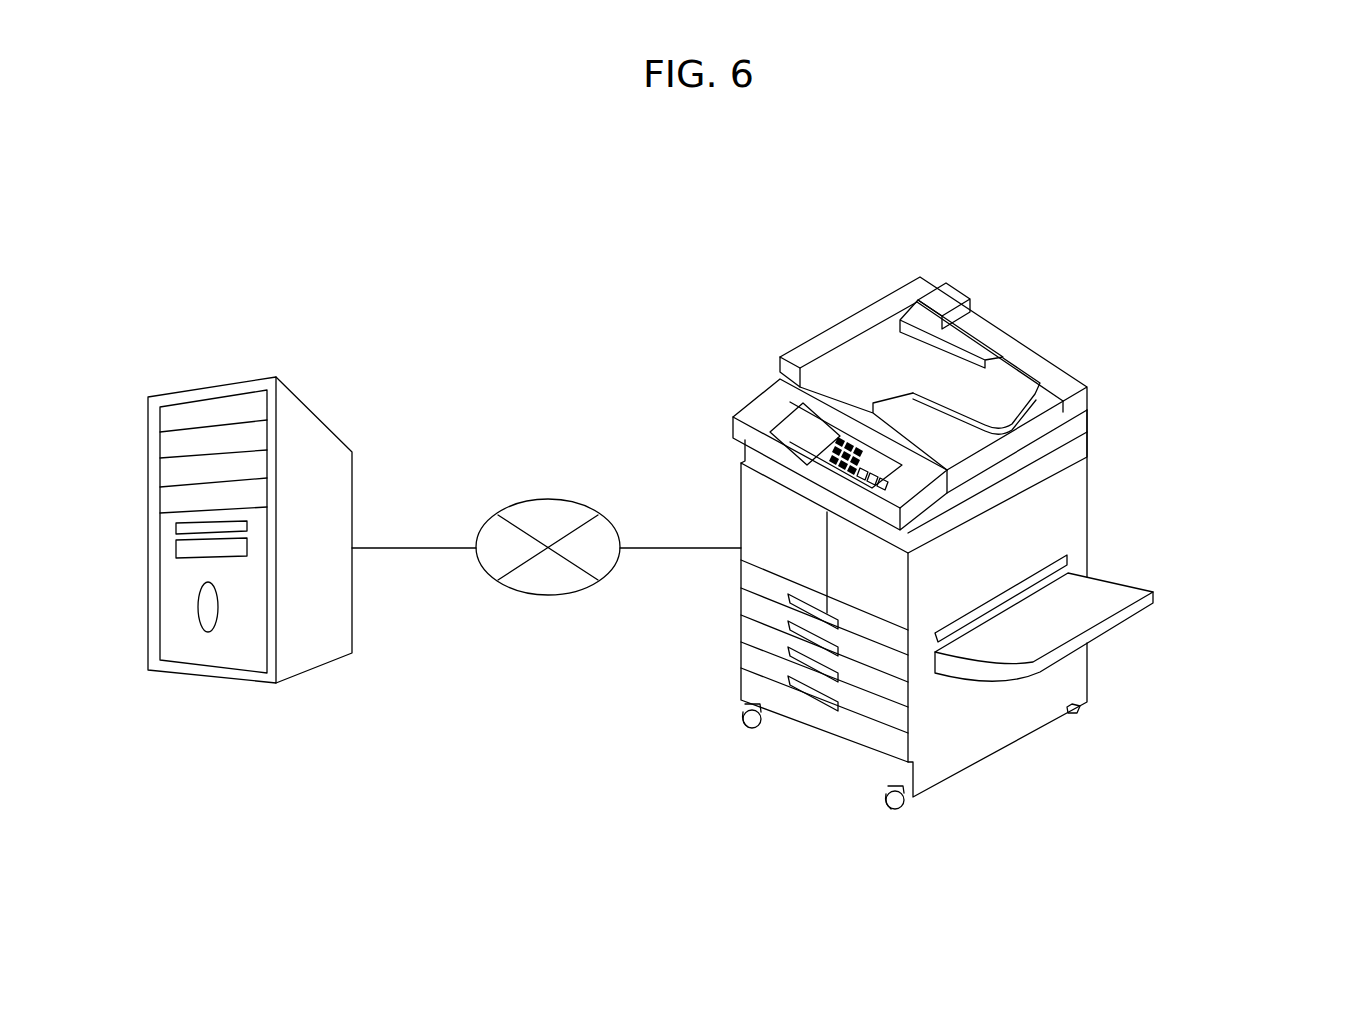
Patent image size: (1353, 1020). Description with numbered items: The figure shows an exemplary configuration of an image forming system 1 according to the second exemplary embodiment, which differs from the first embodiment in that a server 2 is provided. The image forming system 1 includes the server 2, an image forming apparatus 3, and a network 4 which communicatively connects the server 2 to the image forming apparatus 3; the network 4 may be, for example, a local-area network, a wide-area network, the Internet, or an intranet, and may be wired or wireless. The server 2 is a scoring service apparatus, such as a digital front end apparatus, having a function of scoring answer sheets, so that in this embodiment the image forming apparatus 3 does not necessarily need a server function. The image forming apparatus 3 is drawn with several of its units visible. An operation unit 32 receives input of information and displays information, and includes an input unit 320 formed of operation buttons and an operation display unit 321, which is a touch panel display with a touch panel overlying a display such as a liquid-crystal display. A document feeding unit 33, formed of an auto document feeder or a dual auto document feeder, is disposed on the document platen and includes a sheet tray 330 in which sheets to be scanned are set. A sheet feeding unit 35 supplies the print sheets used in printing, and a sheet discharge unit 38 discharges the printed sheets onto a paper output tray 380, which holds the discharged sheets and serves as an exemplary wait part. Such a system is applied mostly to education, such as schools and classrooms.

The image forming system 1 is at (729, 231).
The server 2 is at (303, 402).
The image forming apparatus 3 is at (1109, 246).
The network 4 is at (560, 498).
The operation unit 32 is at (780, 418).
The document feeding unit 33 is at (1028, 350).
The sheet feeding unit 35 is at (847, 722).
The sheet discharge unit 38 is at (1177, 576).
The input unit 320 is at (877, 450).
The operation display unit 321 is at (803, 423).
The sheet tray 330 is at (895, 343).
The paper output tray 380 is at (1130, 618).